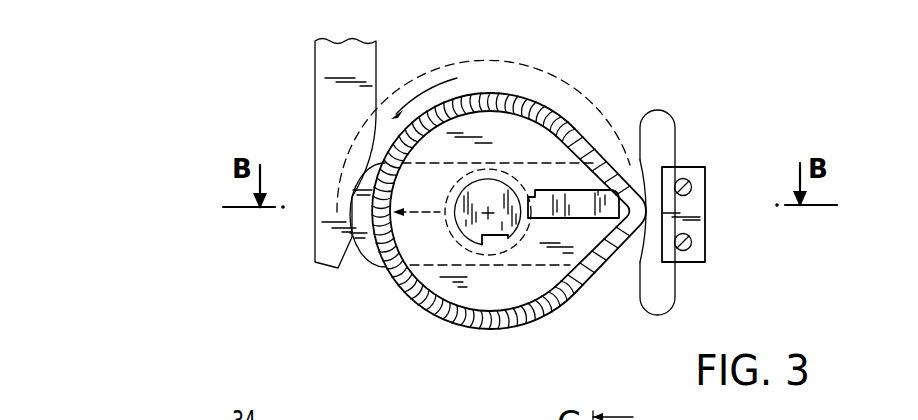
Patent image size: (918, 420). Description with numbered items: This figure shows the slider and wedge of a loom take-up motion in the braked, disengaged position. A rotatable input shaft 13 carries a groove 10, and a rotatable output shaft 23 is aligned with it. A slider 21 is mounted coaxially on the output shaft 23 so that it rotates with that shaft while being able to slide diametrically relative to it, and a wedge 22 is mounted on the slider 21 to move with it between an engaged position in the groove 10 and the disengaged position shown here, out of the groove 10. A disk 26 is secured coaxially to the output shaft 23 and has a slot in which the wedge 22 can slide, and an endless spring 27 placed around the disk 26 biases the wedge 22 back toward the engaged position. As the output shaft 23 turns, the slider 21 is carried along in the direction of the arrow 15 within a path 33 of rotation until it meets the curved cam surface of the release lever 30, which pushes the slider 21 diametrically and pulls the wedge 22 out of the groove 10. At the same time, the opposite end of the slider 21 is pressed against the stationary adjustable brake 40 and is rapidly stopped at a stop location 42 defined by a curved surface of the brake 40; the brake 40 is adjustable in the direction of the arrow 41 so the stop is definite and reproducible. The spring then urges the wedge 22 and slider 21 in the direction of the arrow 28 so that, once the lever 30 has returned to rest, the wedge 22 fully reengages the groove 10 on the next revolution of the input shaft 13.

The groove 10 is at (493, 237).
The input shaft 13 is at (508, 186).
The arrow 15 is at (415, 98).
The slider 21 is at (362, 253).
The wedge 22 is at (578, 197).
The output shaft 23 is at (488, 250).
The disk 26 is at (448, 290).
The endless spring 27 is at (583, 283).
The arrow 28 is at (420, 214).
The release lever 30 is at (328, 62).
The path of rotation 33 is at (543, 70).
The adjustable brake 40 is at (688, 167).
The arrow 41 is at (667, 345).
The stop location 42 is at (646, 211).